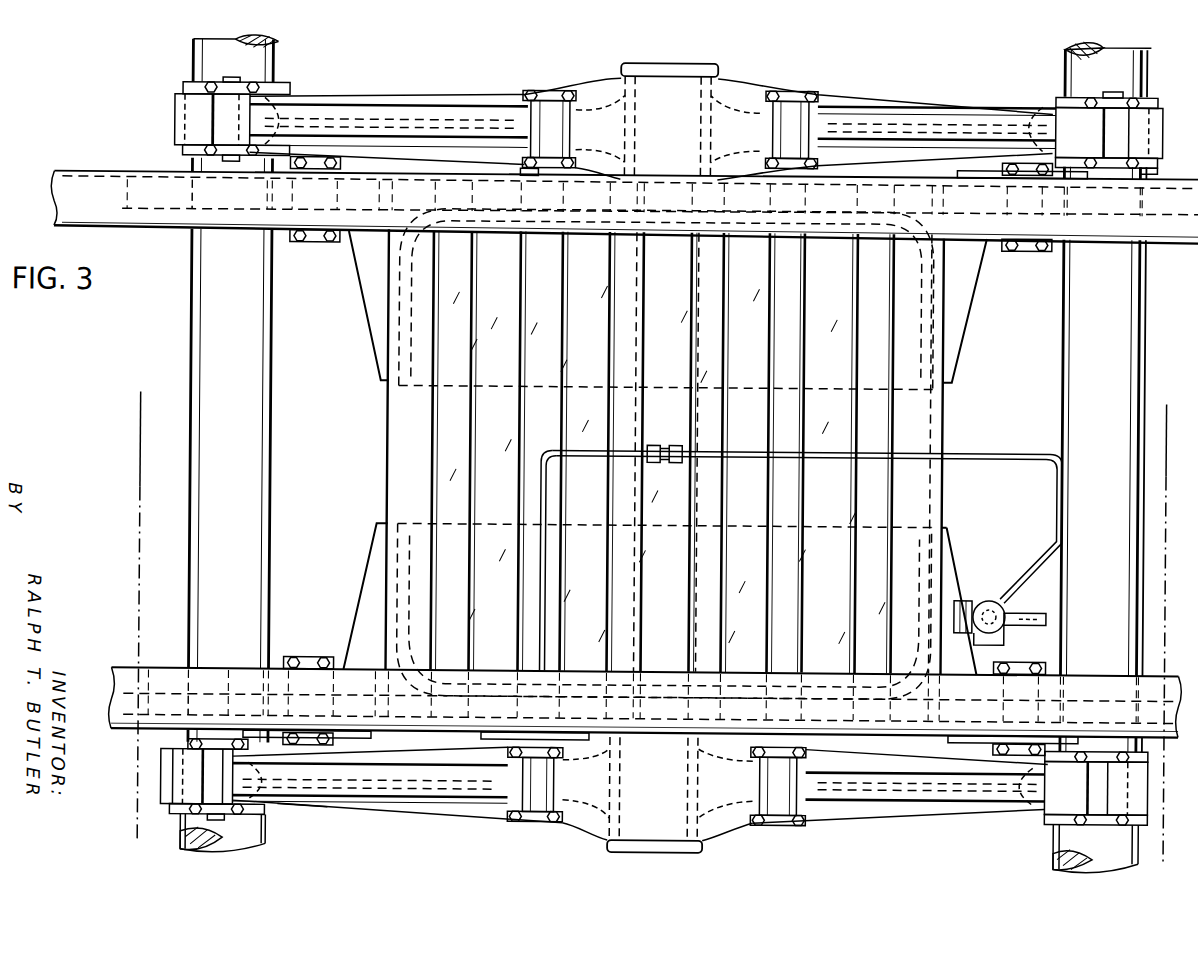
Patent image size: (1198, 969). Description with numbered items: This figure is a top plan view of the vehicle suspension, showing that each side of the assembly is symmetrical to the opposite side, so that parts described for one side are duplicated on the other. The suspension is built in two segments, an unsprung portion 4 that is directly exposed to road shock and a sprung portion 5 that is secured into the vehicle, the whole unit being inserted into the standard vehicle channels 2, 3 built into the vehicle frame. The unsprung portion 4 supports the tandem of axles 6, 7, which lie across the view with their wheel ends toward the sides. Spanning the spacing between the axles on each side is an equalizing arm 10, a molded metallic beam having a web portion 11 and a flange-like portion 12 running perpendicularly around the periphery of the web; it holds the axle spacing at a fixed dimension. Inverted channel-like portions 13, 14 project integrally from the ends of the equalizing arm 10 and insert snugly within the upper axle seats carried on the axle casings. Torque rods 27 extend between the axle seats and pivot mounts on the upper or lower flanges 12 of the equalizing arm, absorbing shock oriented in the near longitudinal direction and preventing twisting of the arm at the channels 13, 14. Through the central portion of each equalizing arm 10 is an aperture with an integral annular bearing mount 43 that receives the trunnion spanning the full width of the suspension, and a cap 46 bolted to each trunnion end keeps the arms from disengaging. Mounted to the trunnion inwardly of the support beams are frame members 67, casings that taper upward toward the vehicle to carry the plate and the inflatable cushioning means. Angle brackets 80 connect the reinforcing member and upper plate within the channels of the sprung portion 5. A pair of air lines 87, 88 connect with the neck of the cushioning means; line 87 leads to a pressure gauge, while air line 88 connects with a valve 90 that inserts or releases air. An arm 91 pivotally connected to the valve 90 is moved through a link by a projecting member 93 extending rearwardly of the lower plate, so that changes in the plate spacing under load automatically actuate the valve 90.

The vehicle channel 2 is at (1108, 673).
The vehicle channel 3 is at (1175, 238).
The unsprung portion 4 is at (1192, 425).
The sprung portion 5 is at (138, 412).
The axle 6 is at (1066, 396).
The axle 7 is at (276, 441).
The equalizing arm 10 is at (440, 98).
The web portion 11 is at (313, 812).
The flange-like portion 12 is at (485, 812).
The inverted channel-like portion 13 is at (172, 118).
The inverted channel-like portion 14 is at (1162, 132).
The torque rod 27 is at (358, 104).
The annular bearing mount 43 is at (720, 838).
The cap 46 is at (708, 64).
The frame member 67 is at (398, 430).
The angle bracket 80 is at (372, 300).
The air line 87 is at (545, 448).
The air line 88 is at (962, 451).
The valve 90 is at (988, 598).
The arm 91 is at (1005, 642).
The projecting member 93 is at (1018, 612).